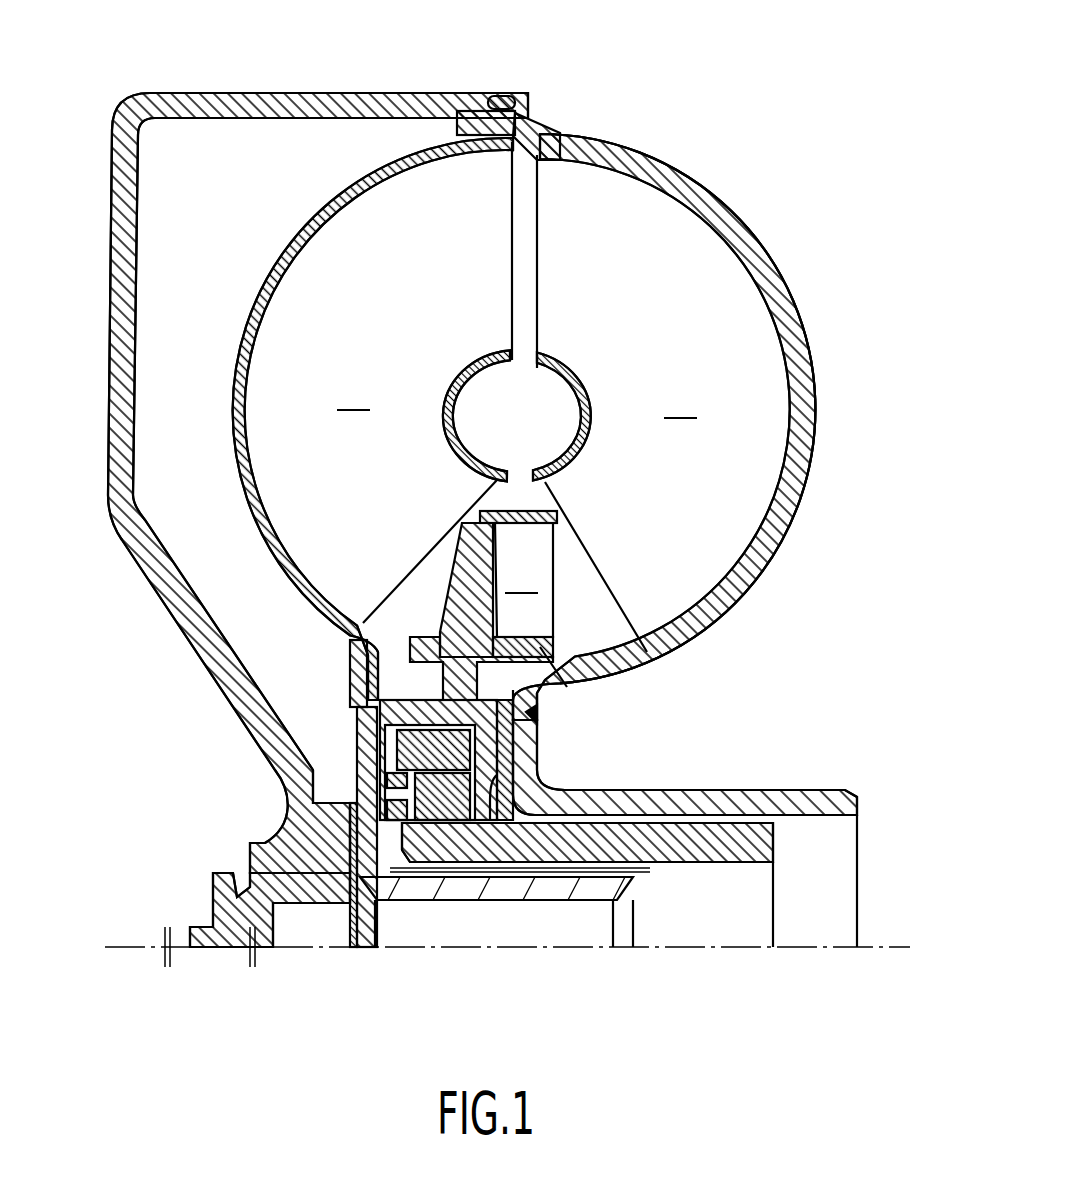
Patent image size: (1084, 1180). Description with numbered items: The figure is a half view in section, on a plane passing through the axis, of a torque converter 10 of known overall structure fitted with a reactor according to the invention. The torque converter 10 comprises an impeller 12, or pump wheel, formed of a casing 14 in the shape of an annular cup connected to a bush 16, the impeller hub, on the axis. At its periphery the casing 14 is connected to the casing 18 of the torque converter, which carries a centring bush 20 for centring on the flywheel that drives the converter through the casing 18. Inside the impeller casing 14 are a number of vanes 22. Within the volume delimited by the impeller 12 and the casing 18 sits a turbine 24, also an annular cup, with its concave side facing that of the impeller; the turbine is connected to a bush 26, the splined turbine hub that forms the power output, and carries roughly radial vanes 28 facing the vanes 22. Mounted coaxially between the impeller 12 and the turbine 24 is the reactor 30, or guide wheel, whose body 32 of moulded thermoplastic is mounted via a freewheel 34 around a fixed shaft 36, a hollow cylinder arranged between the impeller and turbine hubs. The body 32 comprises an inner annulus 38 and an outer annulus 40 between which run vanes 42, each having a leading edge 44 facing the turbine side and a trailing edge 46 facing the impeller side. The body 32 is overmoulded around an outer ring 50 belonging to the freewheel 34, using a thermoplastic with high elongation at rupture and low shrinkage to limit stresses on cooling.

The torque converter 10 is at (755, 150).
The impeller 12 is at (800, 536).
The casing 14 is at (818, 352).
The bush 16 is at (755, 790).
The casing 18 is at (178, 637).
The centring bush 20 is at (320, 893).
The vanes 22 is at (682, 402).
The turbine 24 is at (262, 262).
The bush 26 is at (543, 880).
The vanes 28 is at (355, 394).
The reactor 30 is at (572, 633).
The body 32 is at (538, 714).
The freewheel 34 is at (350, 792).
The fixed shaft 36 is at (706, 862).
The inner annulus 38 is at (552, 690).
The outer annulus 40 is at (536, 513).
The vanes 42 is at (518, 584).
The leading edge 44 is at (460, 583).
The trailing edge 46 is at (557, 580).
The outer ring 50 is at (505, 745).